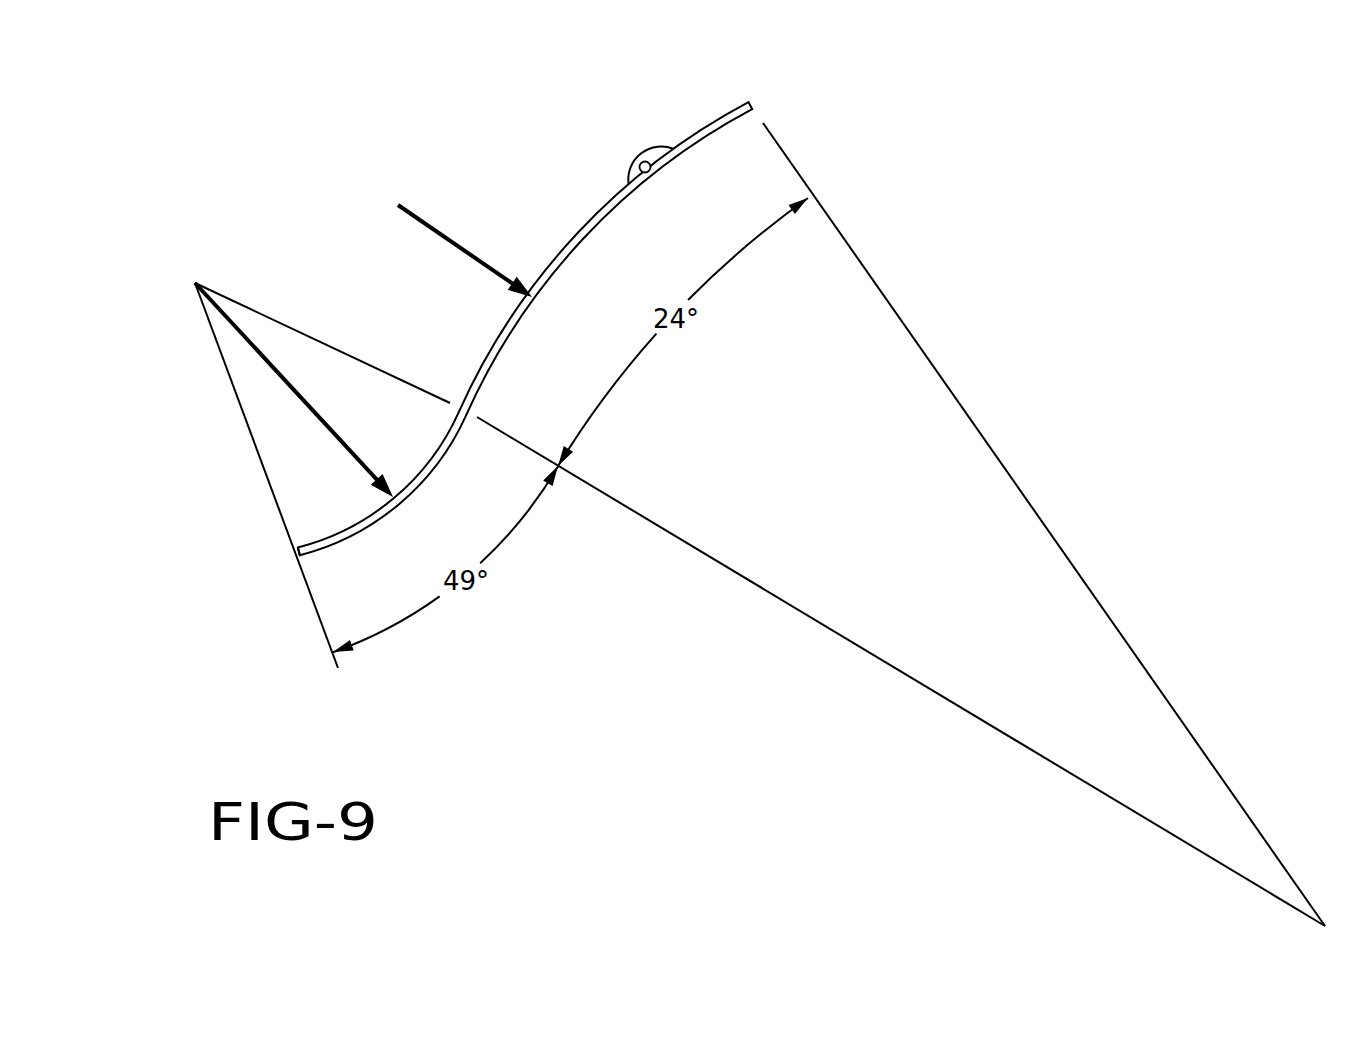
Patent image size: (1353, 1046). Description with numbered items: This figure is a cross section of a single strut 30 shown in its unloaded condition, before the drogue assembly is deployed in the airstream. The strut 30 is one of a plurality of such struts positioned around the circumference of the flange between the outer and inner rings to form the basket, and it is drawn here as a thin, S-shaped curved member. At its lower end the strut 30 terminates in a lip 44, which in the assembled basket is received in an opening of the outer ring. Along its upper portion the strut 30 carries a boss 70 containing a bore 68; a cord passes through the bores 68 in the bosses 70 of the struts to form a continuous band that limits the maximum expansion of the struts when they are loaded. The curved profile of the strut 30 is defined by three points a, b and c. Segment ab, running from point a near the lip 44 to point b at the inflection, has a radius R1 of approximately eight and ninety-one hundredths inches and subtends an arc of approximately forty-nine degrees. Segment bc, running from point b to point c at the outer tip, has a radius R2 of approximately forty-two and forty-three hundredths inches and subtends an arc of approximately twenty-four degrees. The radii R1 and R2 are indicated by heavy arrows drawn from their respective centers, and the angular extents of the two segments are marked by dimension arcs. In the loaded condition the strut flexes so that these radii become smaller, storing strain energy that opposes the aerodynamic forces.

The radius of segment ab R1 is at (195, 283).
The radius of segment bc R2 is at (398, 205).
The strut 30 is at (497, 340).
The lip 44 is at (298, 548).
The bore 68 is at (643, 164).
The boss 70 is at (628, 172).
The point a is at (300, 566).
The point b is at (385, 518).
The point c is at (758, 110).